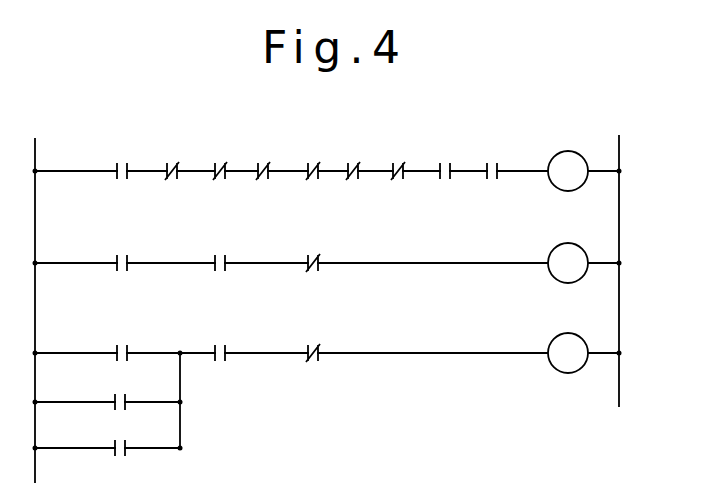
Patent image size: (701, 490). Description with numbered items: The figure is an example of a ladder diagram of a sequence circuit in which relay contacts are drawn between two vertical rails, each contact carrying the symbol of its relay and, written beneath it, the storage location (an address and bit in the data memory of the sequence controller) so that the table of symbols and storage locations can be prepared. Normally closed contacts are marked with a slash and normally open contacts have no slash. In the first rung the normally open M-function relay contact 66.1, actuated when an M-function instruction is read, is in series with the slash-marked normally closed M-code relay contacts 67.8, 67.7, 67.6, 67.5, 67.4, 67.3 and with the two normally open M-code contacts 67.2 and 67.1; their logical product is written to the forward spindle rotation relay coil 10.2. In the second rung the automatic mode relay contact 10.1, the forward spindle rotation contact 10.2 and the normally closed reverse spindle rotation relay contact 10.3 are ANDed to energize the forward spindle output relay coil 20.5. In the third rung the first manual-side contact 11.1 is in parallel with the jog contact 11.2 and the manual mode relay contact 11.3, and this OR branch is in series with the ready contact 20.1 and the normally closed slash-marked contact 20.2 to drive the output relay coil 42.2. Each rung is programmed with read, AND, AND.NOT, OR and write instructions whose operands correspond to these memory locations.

The MF contact storage location 66.1 is at (122, 172).
The M28 contact storage location 67.8 is at (172, 172).
The M24 contact storage location 67.7 is at (220, 172).
The M22 contact storage location 67.6 is at (263, 172).
The M21 contact storage location 67.5 is at (313, 172).
The M18 contact storage location 67.4 is at (353, 172).
The M14 contact storage location 67.3 is at (398, 172).
The M12 contact storage location 67.2 is at (445, 172).
The M11 contact storage location 67.1 is at (492, 172).
The AUT contact storage location 10.1 is at (122, 266).
The M03 relay storage location 10.2 is at (435, 223).
The SPCCW contact storage location 10.3 is at (313, 266).
The HS.M contact storage location 11.1 is at (121, 352).
The READY contact storage location 20.1 is at (220, 352).
The CRH contact storage location 20.2 is at (313, 352).
The J.M contact storage location 11.2 is at (128, 408).
The MAN contact storage location 11.3 is at (137, 456).
The SPCW relay storage location 20.5 is at (568, 275).
The CRA relay storage location 42.2 is at (568, 366).